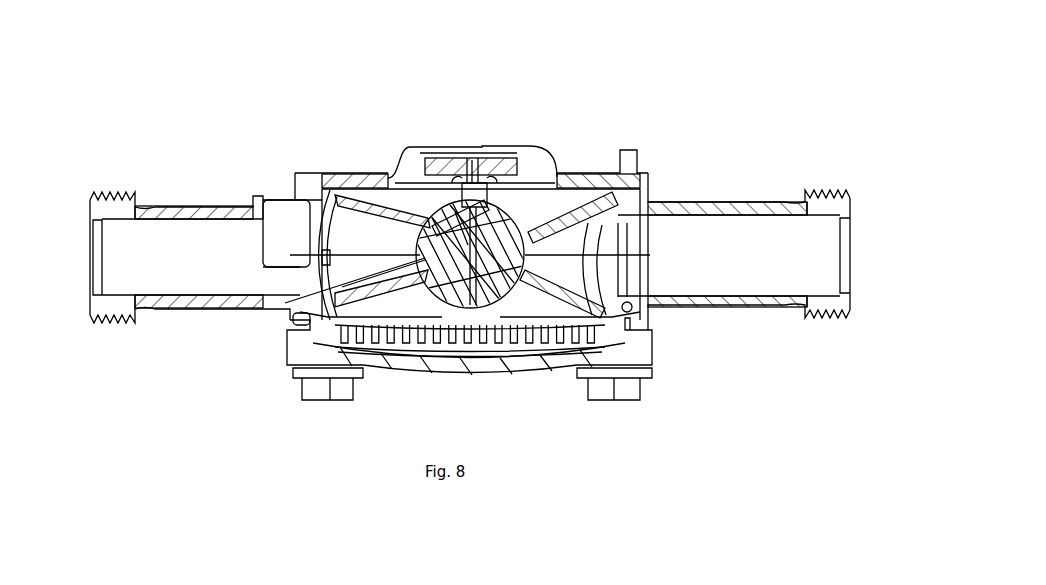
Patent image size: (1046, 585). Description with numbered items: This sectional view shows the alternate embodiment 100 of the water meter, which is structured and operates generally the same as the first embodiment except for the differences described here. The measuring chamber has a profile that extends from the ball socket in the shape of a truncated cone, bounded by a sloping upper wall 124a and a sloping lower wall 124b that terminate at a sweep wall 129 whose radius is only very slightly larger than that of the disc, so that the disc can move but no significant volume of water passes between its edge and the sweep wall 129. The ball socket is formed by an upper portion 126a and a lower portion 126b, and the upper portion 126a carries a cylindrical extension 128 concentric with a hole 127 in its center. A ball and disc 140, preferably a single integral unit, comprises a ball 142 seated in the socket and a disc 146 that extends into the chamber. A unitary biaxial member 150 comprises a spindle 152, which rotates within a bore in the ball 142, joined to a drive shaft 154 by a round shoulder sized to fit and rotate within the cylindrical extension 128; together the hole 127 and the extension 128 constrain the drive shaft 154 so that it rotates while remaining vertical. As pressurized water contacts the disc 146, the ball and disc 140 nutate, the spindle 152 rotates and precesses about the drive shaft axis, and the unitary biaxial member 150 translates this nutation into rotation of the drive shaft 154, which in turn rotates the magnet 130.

The alternate embodiment 100 is at (305, 146).
The sloping upper wall 124a is at (387, 190).
The sloping lower wall 124b is at (363, 300).
The upper portion of the ball socket 126a is at (540, 195).
The lower portion of the ball socket 126b is at (437, 300).
The hole 127 is at (481, 181).
The cylindrical extension 128 is at (491, 178).
The sweep wall 129 is at (290, 312).
The magnet 130 is at (455, 222).
The ball and disc 140 is at (558, 270).
The ball 142 is at (423, 252).
The disc 146 is at (620, 197).
The unitary biaxial member 150 is at (432, 212).
The spindle 152 is at (533, 320).
The drive shaft 154 is at (470, 187).